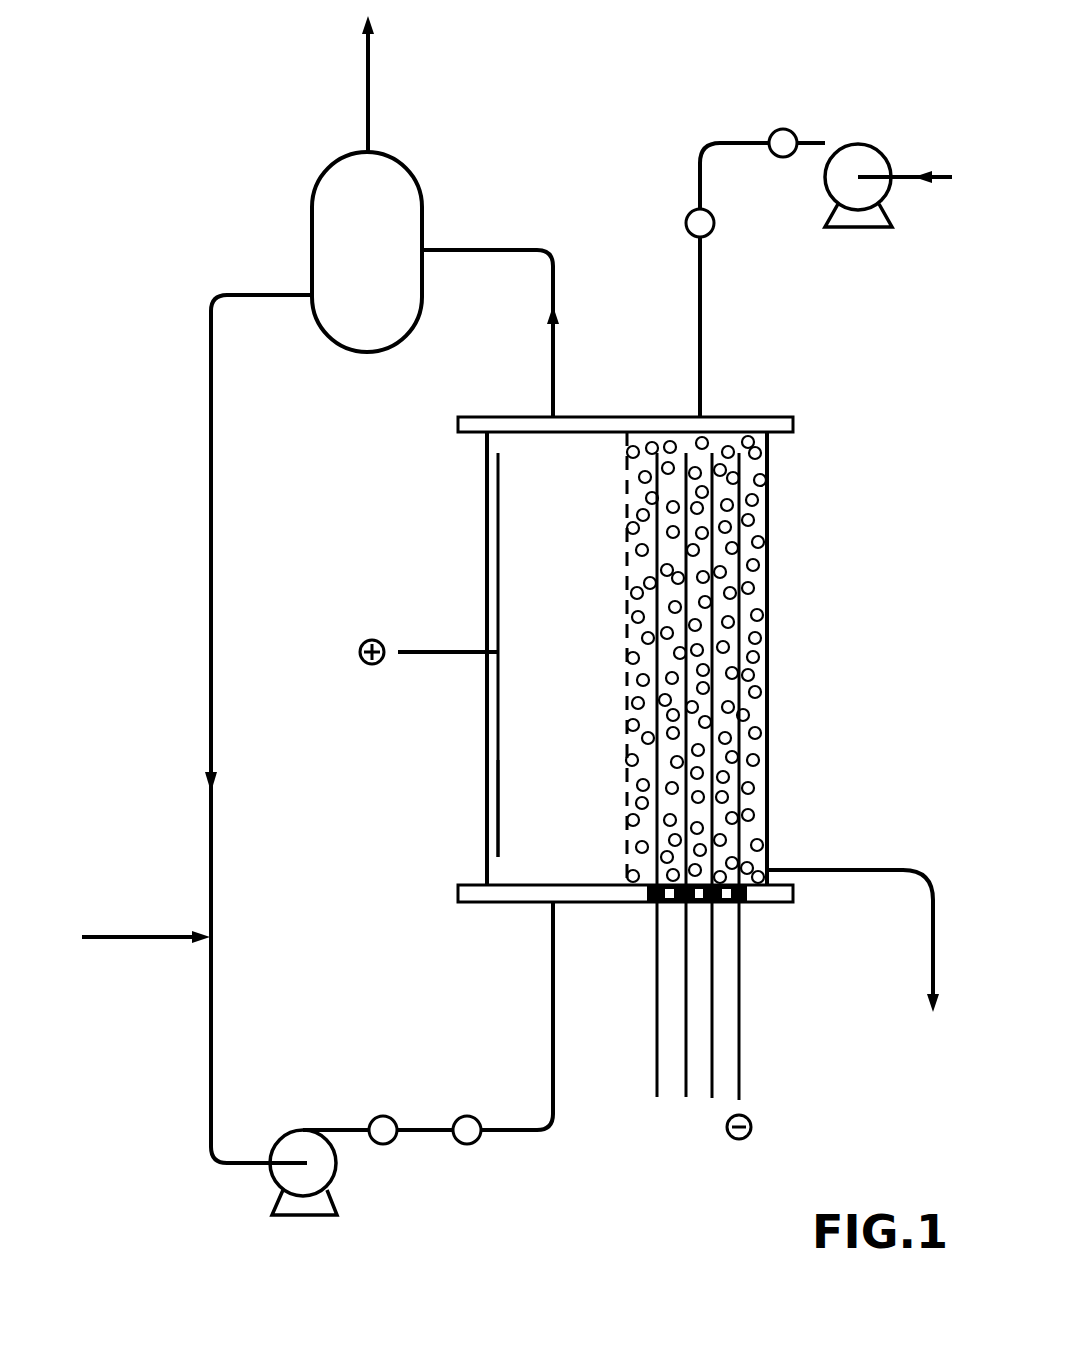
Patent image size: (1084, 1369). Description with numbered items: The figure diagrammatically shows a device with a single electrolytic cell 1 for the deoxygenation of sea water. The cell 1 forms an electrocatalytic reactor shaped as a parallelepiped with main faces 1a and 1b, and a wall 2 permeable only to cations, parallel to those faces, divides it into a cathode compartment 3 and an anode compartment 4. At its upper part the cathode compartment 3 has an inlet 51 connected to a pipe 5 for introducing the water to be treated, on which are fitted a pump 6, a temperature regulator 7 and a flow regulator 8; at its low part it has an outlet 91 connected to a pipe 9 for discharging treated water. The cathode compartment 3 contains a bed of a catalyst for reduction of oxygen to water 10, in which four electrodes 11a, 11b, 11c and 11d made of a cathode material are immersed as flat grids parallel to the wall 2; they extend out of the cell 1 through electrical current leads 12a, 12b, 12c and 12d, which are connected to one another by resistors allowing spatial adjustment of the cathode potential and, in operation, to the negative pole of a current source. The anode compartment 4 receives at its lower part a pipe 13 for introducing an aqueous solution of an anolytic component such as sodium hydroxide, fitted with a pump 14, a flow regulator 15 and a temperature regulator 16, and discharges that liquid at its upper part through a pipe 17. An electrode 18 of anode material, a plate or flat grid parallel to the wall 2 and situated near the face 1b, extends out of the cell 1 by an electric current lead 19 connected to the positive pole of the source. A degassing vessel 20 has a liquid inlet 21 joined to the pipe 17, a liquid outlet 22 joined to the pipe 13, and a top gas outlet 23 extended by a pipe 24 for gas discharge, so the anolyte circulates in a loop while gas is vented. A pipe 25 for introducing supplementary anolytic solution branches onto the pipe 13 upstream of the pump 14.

The electrolytic cell 1 is at (806, 404).
The main face 1a is at (768, 468).
The main face 1b is at (487, 735).
The wall 2 is at (626, 475).
The cathode compartment 3 is at (745, 503).
The anode compartment 4 is at (528, 556).
The pipe 5 is at (700, 327).
The inlet 51 is at (700, 415).
The pump 6 is at (862, 150).
The temperature regulator 7 is at (687, 216).
The flow regulator 8 is at (783, 129).
The pipe 9 is at (880, 868).
The outlet 91 is at (767, 870).
The bed of a catalyst for reduction of oxygen to water 10 is at (718, 840).
The electrode 11a is at (655, 567).
The electrode 11b is at (685, 653).
The electrode 11c is at (712, 658).
The electrode 11d is at (739, 735).
The electrical current lead 12a is at (657, 1058).
The electrical current lead 12b is at (686, 1090).
The electrical current lead 12c is at (712, 1090).
The electrical current lead 12d is at (739, 1085).
The pipe 13 is at (211, 593).
The pump 14 is at (300, 1140).
The flow regulator 15 is at (383, 1116).
The temperature regulator 16 is at (467, 1116).
The pipe 17 is at (553, 372).
The electrode 18 is at (498, 798).
The electric current lead 19 is at (458, 652).
The degassing vessel 20 is at (335, 245).
The inlet 21 is at (422, 250).
The outlet 22 is at (312, 300).
The outlet 23 is at (368, 150).
The pipe 24 is at (368, 90).
The pipe 25 is at (143, 935).